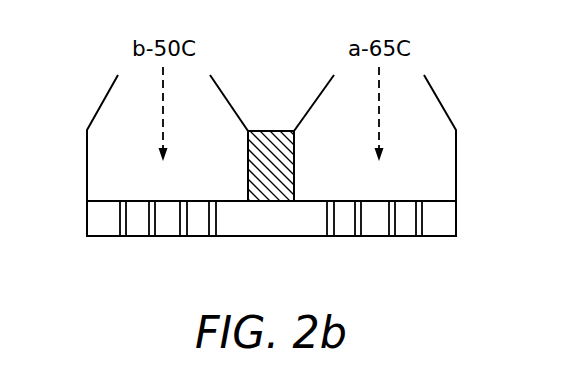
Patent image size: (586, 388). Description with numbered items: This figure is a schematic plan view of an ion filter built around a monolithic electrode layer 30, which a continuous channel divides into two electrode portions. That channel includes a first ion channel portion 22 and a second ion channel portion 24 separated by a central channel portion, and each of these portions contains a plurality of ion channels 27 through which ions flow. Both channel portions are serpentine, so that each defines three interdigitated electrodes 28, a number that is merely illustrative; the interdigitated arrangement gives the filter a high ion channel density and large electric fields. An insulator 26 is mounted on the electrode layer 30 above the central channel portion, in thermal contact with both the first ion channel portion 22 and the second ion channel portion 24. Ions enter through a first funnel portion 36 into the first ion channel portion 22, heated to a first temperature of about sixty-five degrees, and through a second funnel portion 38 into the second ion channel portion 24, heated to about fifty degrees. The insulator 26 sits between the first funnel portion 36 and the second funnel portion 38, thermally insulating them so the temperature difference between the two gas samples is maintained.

The first ion channel portion 22 is at (441, 244).
The second ion channel portion 24 is at (100, 245).
The insulator 26 is at (268, 131).
The ion channels 27 is at (420, 236).
The interdigitated electrodes 28 is at (199, 229).
The monolithic electrode layer 30 is at (449, 217).
The first funnel portion 36 is at (444, 149).
The second funnel portion 38 is at (100, 149).